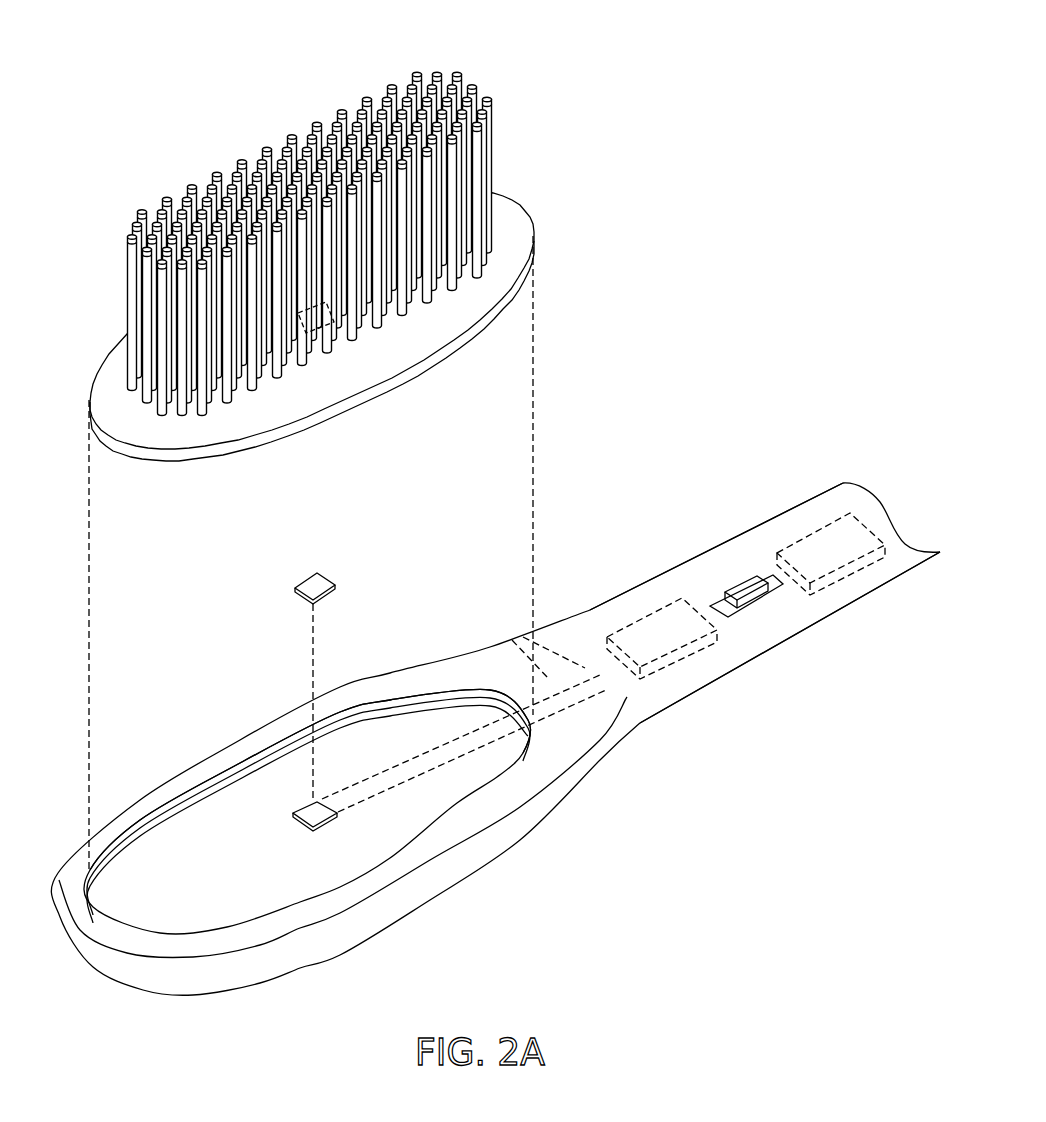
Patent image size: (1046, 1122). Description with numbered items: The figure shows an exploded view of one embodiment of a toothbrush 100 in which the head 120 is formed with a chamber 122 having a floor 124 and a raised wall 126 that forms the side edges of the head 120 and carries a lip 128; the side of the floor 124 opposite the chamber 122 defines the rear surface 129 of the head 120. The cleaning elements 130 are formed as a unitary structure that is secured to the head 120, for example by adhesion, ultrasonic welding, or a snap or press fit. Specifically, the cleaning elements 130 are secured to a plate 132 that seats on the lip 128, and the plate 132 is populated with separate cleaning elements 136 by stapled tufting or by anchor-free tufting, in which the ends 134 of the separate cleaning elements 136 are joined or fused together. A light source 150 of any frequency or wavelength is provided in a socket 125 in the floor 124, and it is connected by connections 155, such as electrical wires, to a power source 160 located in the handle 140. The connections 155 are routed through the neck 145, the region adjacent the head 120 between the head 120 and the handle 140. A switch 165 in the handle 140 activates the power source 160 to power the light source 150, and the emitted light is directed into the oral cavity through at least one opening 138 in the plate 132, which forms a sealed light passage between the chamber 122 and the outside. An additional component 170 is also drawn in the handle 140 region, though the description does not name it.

The toothbrush 100 is at (576, 450).
The head 120 is at (196, 763).
The chamber 122 is at (378, 699).
The floor 124 is at (180, 843).
The socket 125 is at (320, 822).
The raised wall 126 is at (115, 872).
The lip 128 is at (267, 760).
The rear surface 129 is at (332, 957).
The cleaning elements 130 is at (487, 70).
The plate 132 is at (106, 353).
The ends 134 is at (479, 287).
The separate cleaning elements 136 is at (494, 138).
The opening 138 is at (330, 330).
The handle 140 is at (757, 528).
The neck 145 is at (573, 613).
The light source 150 is at (336, 588).
The connections 155 is at (524, 650).
The power source 160 is at (830, 526).
The switch 165 is at (727, 587).
The electronics module 170 is at (650, 612).